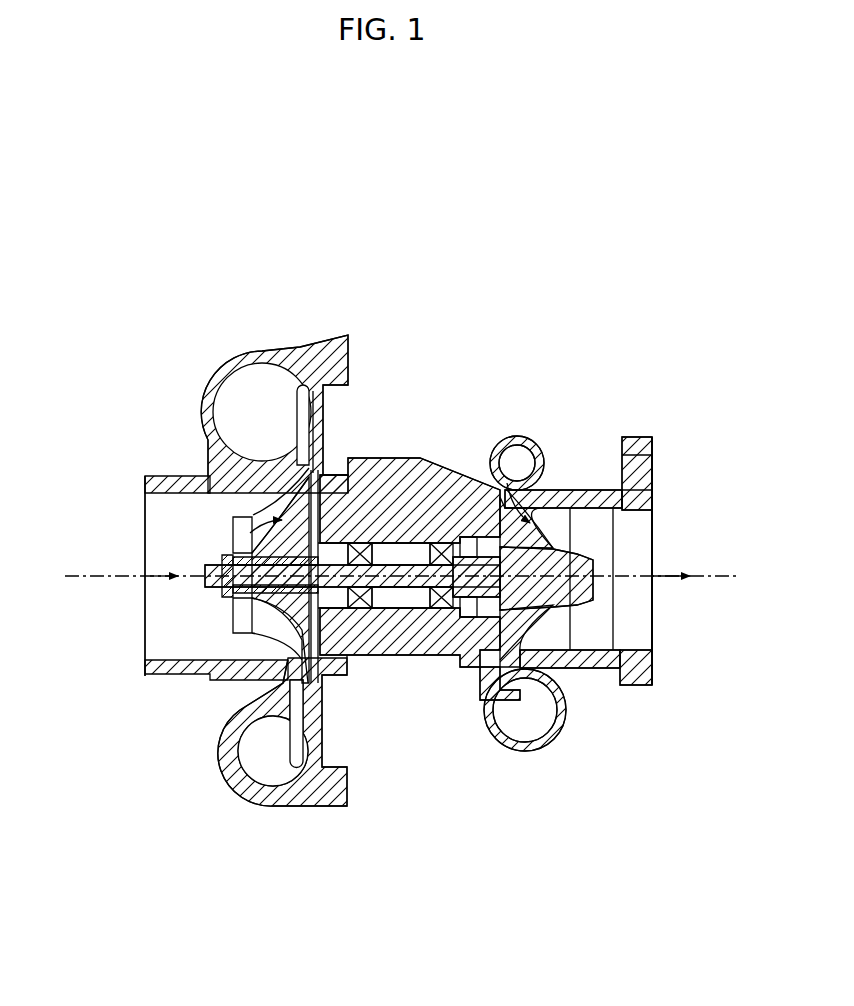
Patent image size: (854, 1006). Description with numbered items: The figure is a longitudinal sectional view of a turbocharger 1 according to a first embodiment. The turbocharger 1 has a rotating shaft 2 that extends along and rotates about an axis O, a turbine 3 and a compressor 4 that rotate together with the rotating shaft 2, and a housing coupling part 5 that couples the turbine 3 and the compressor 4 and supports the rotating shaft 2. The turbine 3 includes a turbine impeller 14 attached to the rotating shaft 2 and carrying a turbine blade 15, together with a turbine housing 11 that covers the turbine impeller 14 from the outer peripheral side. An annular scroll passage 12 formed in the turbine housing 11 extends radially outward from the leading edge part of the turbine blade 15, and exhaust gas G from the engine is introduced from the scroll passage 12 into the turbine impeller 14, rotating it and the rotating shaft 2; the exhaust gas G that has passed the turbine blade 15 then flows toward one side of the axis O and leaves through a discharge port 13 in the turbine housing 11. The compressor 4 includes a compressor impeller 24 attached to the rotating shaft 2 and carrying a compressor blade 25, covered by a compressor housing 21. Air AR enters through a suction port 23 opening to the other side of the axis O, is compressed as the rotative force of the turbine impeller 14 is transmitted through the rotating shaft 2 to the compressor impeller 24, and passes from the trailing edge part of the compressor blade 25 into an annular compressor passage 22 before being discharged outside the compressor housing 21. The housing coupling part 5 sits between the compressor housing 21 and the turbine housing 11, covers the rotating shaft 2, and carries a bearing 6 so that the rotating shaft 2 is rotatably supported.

The turbocharger 1 is at (468, 352).
The rotating shaft 2 is at (397, 590).
The turbine 3 is at (599, 633).
The compressor 4 is at (215, 601).
The housing coupling part 5 is at (408, 460).
The bearing 6 is at (358, 612).
The turbine housing 11 is at (599, 593).
The scroll passage 12 is at (540, 726).
The discharge port 13 is at (645, 500).
The turbine impeller 14 is at (590, 562).
The turbine blade 15 is at (560, 620).
The compressor housing 21 is at (215, 570).
The compressor passage 22 is at (288, 770).
The suction port 23 is at (147, 484).
The compressor impeller 24 is at (240, 640).
The compressor blade 25 is at (287, 637).
The axis O is at (82, 576).
The air AR is at (240, 538).
The exhaust gas G is at (545, 505).